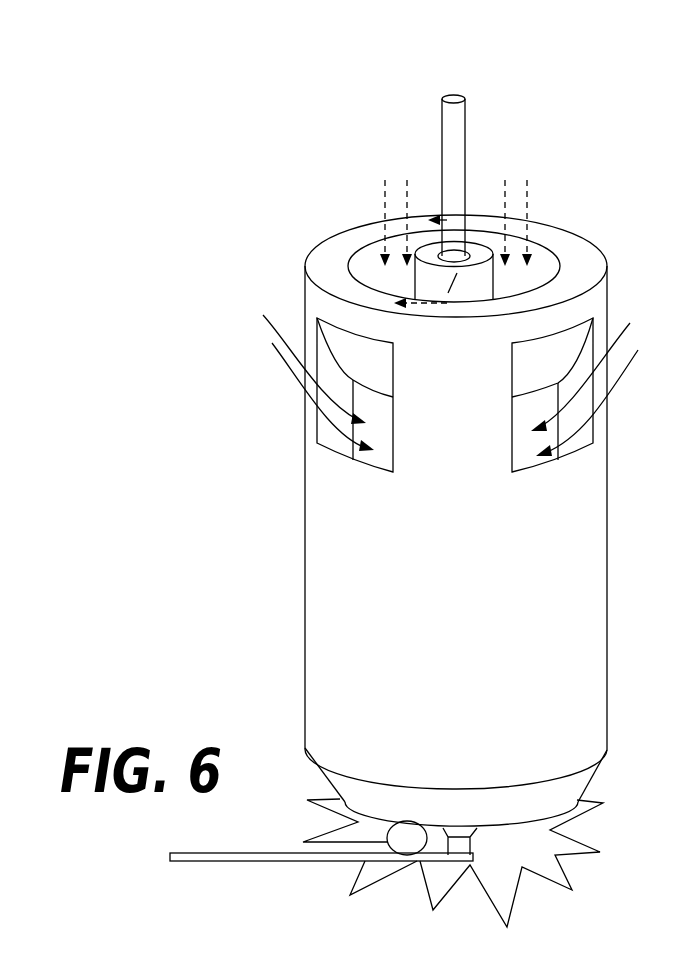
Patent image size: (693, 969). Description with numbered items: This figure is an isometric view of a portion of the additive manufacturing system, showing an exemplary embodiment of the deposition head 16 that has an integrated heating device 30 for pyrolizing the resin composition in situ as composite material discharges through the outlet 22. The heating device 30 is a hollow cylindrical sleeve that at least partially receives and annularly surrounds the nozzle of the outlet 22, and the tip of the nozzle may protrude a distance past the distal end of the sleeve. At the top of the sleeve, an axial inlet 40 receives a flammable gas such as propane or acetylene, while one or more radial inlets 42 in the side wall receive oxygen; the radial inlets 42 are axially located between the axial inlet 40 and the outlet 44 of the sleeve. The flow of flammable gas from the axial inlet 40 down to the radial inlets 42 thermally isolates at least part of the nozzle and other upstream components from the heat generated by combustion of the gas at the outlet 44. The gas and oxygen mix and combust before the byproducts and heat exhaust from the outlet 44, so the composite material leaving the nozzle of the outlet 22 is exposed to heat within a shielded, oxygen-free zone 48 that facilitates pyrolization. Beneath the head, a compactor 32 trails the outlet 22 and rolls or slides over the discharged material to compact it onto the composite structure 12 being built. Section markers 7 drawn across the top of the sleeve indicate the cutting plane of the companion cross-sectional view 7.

The deposition head 16 is at (177, 112).
The outlet 22 is at (155, 300).
The heating device 30 is at (432, 659).
The compactor 32 is at (343, 826).
The axial inlet 40 is at (543, 253).
The radial inlets 42 is at (523, 428).
The outlet of the sleeve 44 is at (563, 825).
The shielded zone 48 is at (492, 855).
The composite structure 12 is at (277, 862).
The rotation direction arrow 7 is at (467, 237).